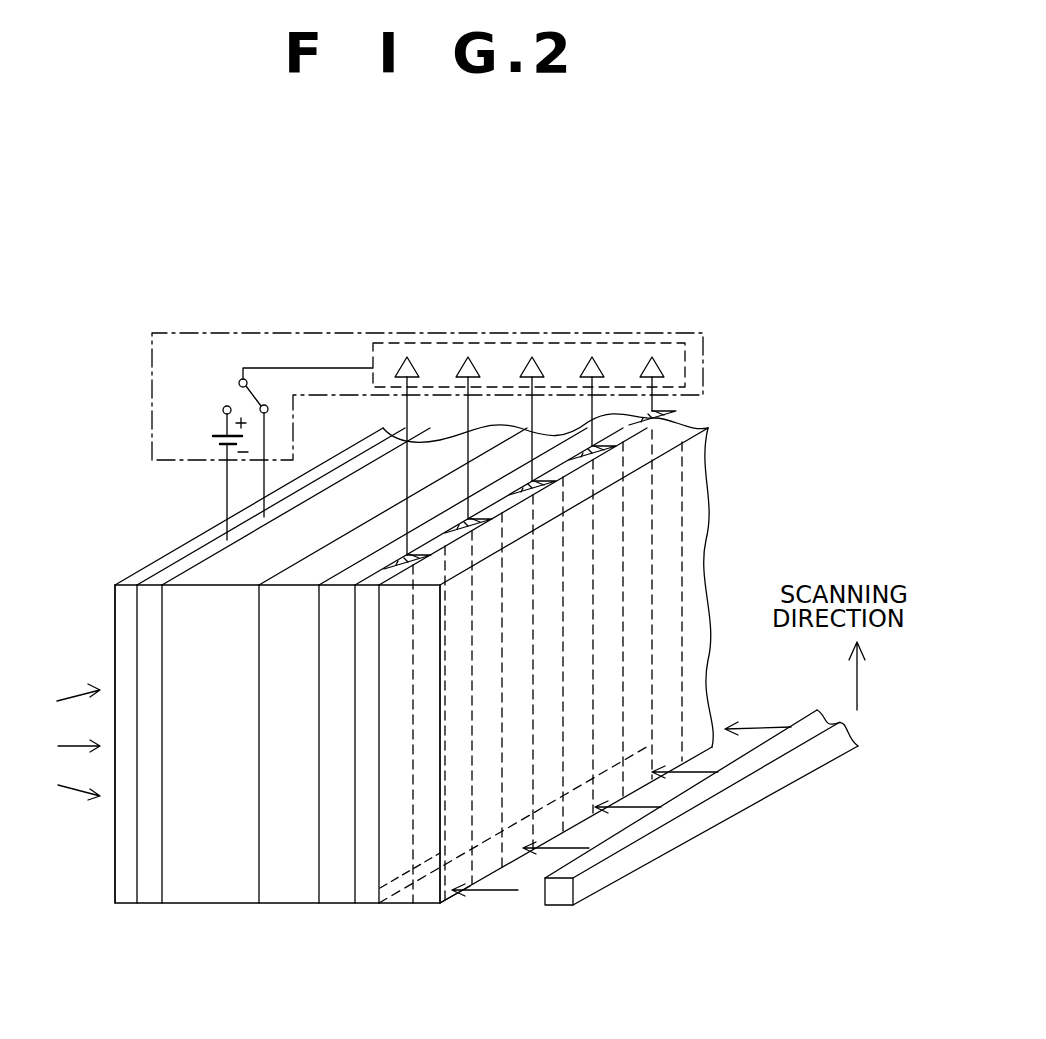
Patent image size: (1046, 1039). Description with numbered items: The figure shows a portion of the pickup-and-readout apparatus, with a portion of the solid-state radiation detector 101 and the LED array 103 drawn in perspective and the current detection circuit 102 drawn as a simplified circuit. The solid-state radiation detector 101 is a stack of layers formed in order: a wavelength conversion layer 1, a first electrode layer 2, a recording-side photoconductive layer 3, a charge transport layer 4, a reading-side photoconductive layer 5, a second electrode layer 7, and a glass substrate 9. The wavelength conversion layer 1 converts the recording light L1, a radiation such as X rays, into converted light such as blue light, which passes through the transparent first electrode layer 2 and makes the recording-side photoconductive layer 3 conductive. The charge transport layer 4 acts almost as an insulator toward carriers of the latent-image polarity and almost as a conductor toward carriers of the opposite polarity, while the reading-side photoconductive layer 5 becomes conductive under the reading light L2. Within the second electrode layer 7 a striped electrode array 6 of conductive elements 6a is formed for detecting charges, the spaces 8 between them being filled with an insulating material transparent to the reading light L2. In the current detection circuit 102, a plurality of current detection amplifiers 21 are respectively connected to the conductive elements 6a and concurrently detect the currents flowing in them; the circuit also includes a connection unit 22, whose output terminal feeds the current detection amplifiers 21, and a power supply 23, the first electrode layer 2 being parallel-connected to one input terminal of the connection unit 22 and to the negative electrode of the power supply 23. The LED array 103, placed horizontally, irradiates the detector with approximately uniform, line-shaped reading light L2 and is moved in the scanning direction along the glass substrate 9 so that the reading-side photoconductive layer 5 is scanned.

The wavelength conversion layer 1 is at (122, 905).
The first electrode layer 2 is at (153, 905).
The recording-side photoconductive layer 3 is at (200, 905).
The charge transport layer 4 is at (282, 905).
The reading-side photoconductive layer 5 is at (333, 905).
The striped electrode array 6 is at (577, 657).
The conductive elements 6a is at (427, 872).
The second electrode layer 7 is at (367, 905).
The spaces 8 is at (463, 850).
The glass substrate 9 is at (433, 907).
The current detection amplifiers 21 is at (672, 367).
The connection unit 22 is at (237, 392).
The power supply 23 is at (208, 442).
The solid-state radiation detector 101 is at (140, 562).
The current detection circuit 102 is at (705, 345).
The LED array 103 is at (632, 870).
The recording light L1 is at (75, 698).
The reading light L2 is at (774, 727).